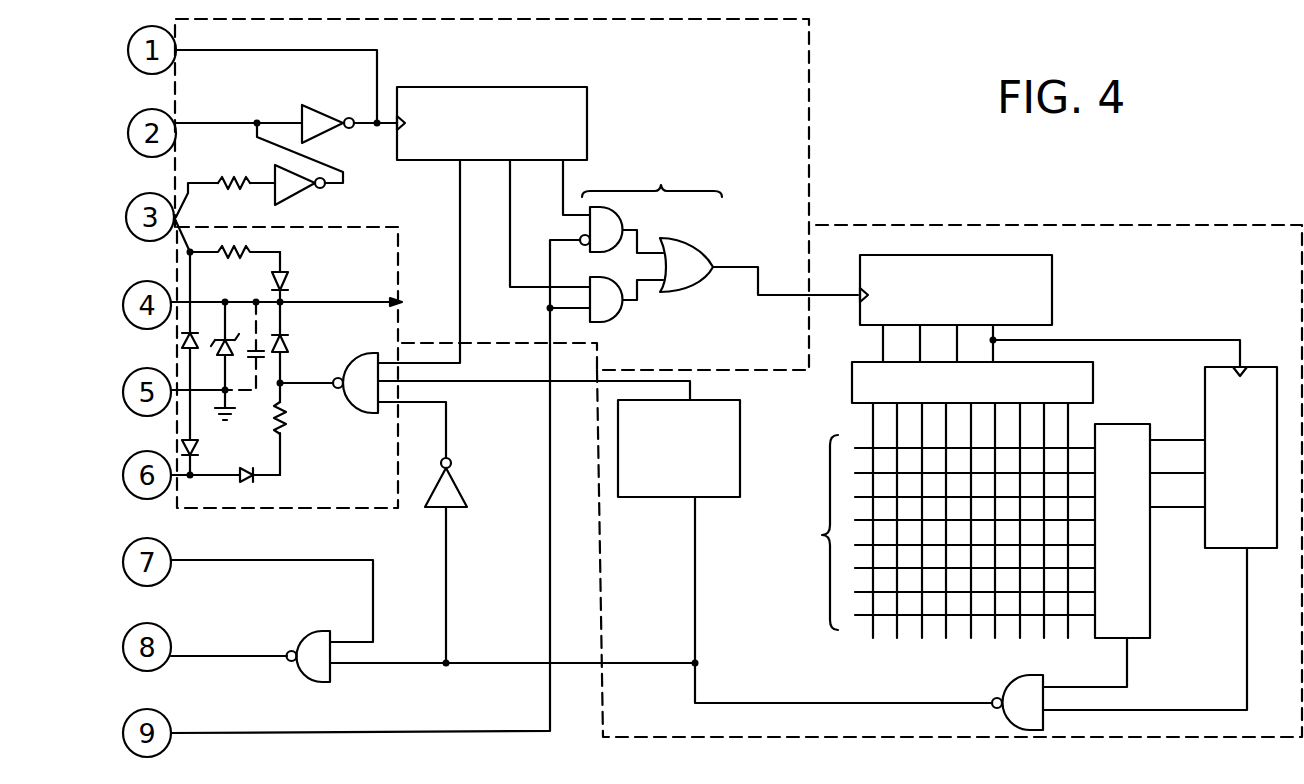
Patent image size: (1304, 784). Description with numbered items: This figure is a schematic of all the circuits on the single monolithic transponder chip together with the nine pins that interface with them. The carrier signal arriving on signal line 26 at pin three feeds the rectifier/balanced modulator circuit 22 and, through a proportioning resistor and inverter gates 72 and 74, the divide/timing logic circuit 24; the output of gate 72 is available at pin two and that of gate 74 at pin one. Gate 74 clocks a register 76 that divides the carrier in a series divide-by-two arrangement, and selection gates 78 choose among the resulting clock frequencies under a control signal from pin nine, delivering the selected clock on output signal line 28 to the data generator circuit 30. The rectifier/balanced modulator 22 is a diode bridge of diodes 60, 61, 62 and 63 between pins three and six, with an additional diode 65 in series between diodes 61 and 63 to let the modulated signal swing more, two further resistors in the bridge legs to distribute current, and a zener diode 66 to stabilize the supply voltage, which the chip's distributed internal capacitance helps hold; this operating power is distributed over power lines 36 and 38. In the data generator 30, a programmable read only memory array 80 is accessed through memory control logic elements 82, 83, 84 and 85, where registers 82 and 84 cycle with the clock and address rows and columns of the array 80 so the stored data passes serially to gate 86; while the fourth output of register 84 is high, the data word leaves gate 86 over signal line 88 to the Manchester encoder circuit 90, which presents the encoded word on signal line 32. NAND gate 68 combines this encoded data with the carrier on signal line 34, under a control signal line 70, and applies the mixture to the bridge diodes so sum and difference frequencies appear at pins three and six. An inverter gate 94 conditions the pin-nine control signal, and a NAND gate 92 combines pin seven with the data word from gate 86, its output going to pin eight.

The rectifier/balanced modulator circuit 22 is at (333, 512).
The divide/timing logic circuit 24 is at (810, 125).
The signal line 26 is at (192, 183).
The output signal line 28 is at (825, 293).
The data generator circuit 30 is at (1112, 225).
The signal line 32 is at (530, 383).
The signal line 34 is at (460, 220).
The power line 36 is at (304, 280).
The power line 38 is at (362, 300).
The diode 60 is at (182, 340).
The diode 61 is at (200, 450).
The diode 62 is at (292, 280).
The diode 63 is at (290, 340).
The additional diode 65 is at (245, 480).
The zener diode 66 is at (216, 342).
The NAND gate 68 is at (350, 410).
The control signal line 70 is at (446, 418).
The inverter gate 72 is at (298, 197).
The inverter gate 74 is at (311, 105).
The register 76 is at (492, 87).
The selection gates 78 is at (660, 190).
The programmable read only memory (PROM) array 80 is at (822, 535).
The register 82 is at (1055, 290).
The memory control logic element 83 is at (1095, 395).
The register 84 is at (1228, 553).
The memory control logic element 85 is at (1151, 606).
The gate 86 is at (1007, 727).
The signal line 88 is at (720, 704).
The Manchester encoder circuit 90 is at (741, 460).
The NAND gate 92 is at (312, 682).
The inverter gate 94 is at (440, 510).